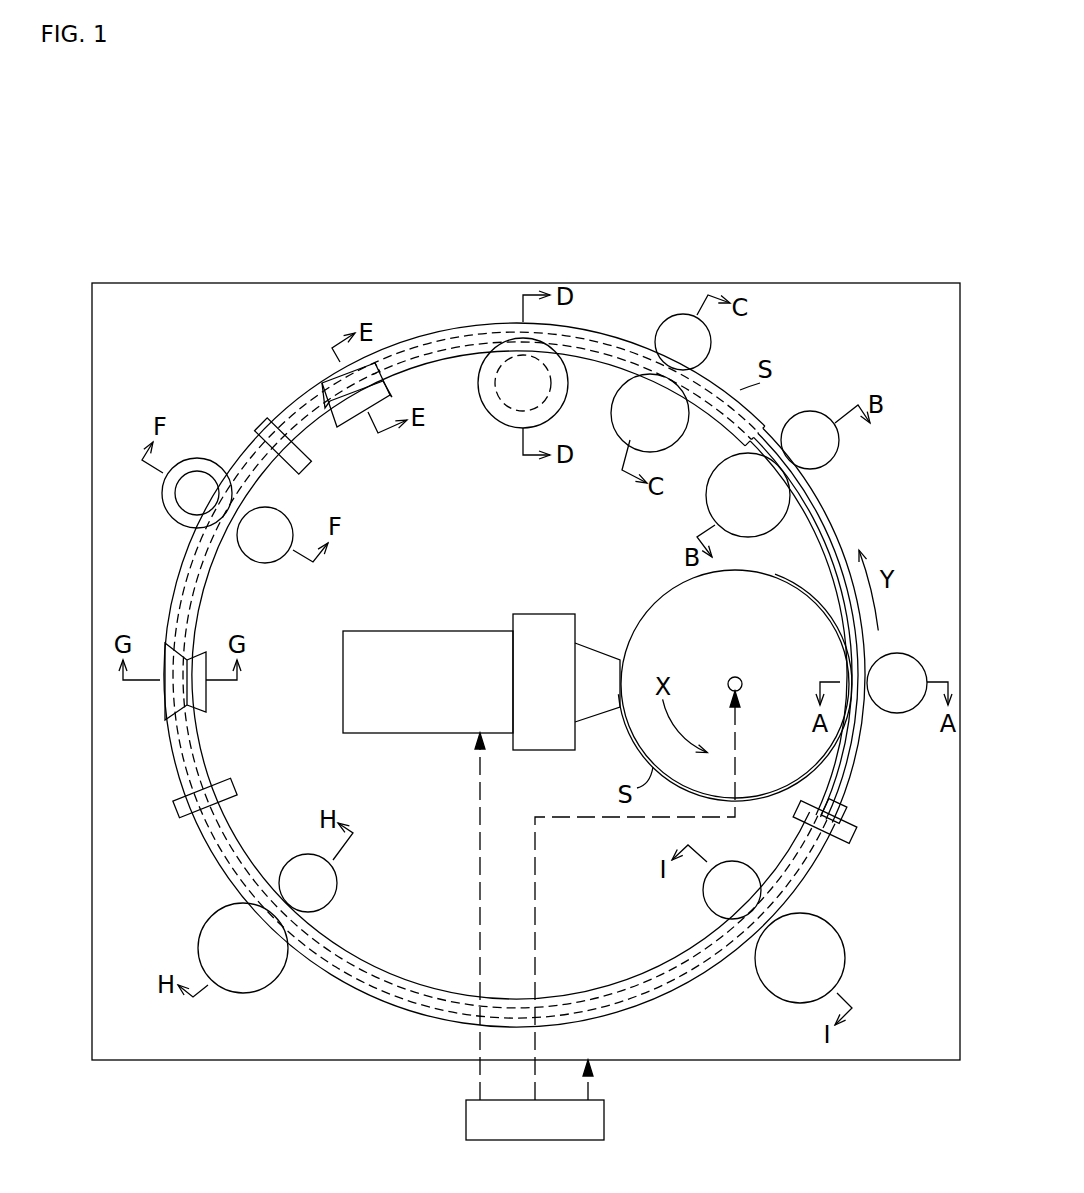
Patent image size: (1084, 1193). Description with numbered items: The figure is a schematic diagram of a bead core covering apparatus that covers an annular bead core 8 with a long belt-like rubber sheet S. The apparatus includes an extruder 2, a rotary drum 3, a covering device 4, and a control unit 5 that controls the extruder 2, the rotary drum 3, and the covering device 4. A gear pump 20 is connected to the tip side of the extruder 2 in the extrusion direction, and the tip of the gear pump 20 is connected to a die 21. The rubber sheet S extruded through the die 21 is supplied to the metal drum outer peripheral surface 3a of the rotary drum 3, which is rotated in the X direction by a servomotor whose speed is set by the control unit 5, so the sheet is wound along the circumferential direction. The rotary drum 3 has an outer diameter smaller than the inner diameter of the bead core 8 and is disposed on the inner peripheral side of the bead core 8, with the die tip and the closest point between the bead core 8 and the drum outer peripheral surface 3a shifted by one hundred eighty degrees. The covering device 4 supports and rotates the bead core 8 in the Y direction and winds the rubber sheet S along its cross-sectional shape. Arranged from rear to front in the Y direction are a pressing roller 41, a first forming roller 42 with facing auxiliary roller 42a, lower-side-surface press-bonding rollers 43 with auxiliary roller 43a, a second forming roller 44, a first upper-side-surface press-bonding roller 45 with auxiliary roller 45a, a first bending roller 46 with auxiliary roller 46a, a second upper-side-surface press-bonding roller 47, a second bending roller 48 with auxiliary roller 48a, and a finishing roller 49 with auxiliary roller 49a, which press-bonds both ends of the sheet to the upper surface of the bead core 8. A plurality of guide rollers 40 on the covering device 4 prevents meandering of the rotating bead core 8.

The extruder 2 is at (380, 632).
The rotary drum 3 is at (667, 583).
The drum outer peripheral surface 3a is at (642, 615).
The covering device 4 is at (786, 1061).
The control unit 5 is at (604, 1122).
The bead core 8 is at (837, 538).
The gear pump 20 is at (543, 615).
The die 21 is at (600, 713).
The guide rollers 40 is at (265, 423).
The pressing roller 41 is at (915, 653).
The first forming roller 42 is at (707, 510).
The auxiliary roller 42a is at (805, 414).
The lower-side-surface press-bonding rollers 43 is at (617, 438).
The auxiliary roller 43a is at (660, 323).
The second forming roller 44 is at (508, 428).
The first upper-side-surface press-bonding roller 45 is at (320, 386).
The auxiliary roller 45a is at (350, 424).
The first bending roller 46 is at (202, 458).
The auxiliary roller 46a is at (290, 517).
The second upper-side-surface press-bonding roller 47 is at (160, 692).
The second bending roller 48 is at (277, 982).
The auxiliary roller 48a is at (338, 895).
The finishing roller 49 is at (765, 990).
The auxiliary roller 49a is at (705, 908).